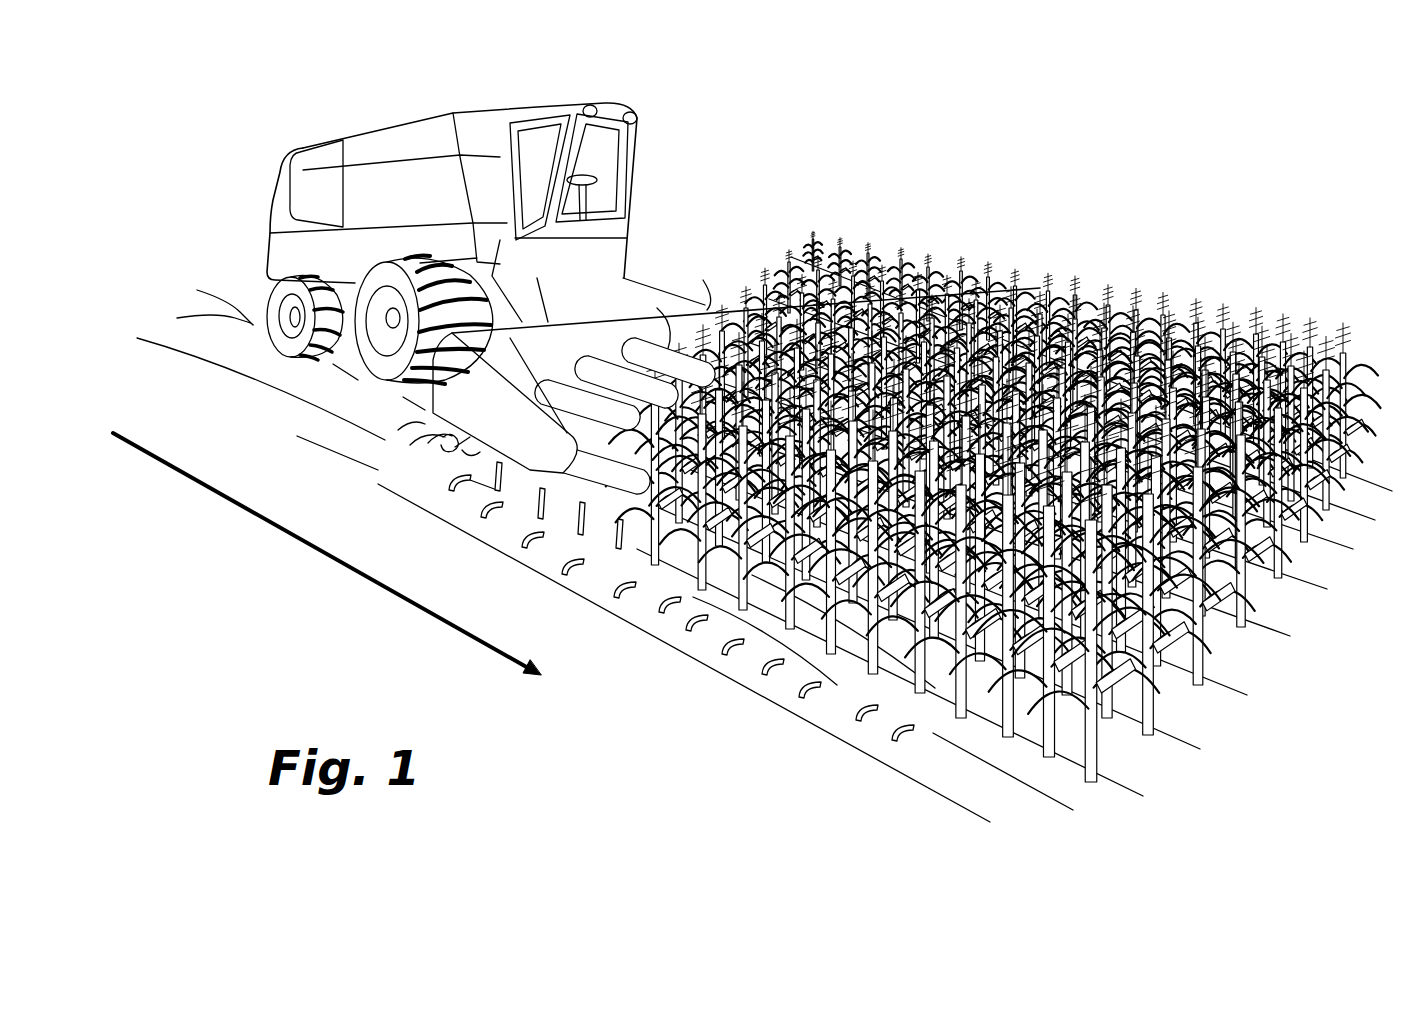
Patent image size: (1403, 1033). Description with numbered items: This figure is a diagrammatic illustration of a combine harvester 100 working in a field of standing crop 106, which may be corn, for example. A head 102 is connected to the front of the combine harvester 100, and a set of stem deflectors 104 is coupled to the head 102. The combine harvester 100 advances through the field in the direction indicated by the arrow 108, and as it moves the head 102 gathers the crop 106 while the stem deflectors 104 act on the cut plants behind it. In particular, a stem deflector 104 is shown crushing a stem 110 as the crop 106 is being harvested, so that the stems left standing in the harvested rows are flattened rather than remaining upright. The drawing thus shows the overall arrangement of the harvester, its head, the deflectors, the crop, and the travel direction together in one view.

The combine harvester 100 is at (537, 98).
The head 102 is at (705, 310).
The stem deflector 104 is at (410, 462).
The crop 106 is at (1224, 288).
The arrow 108 is at (285, 548).
The stem 110 is at (462, 453).